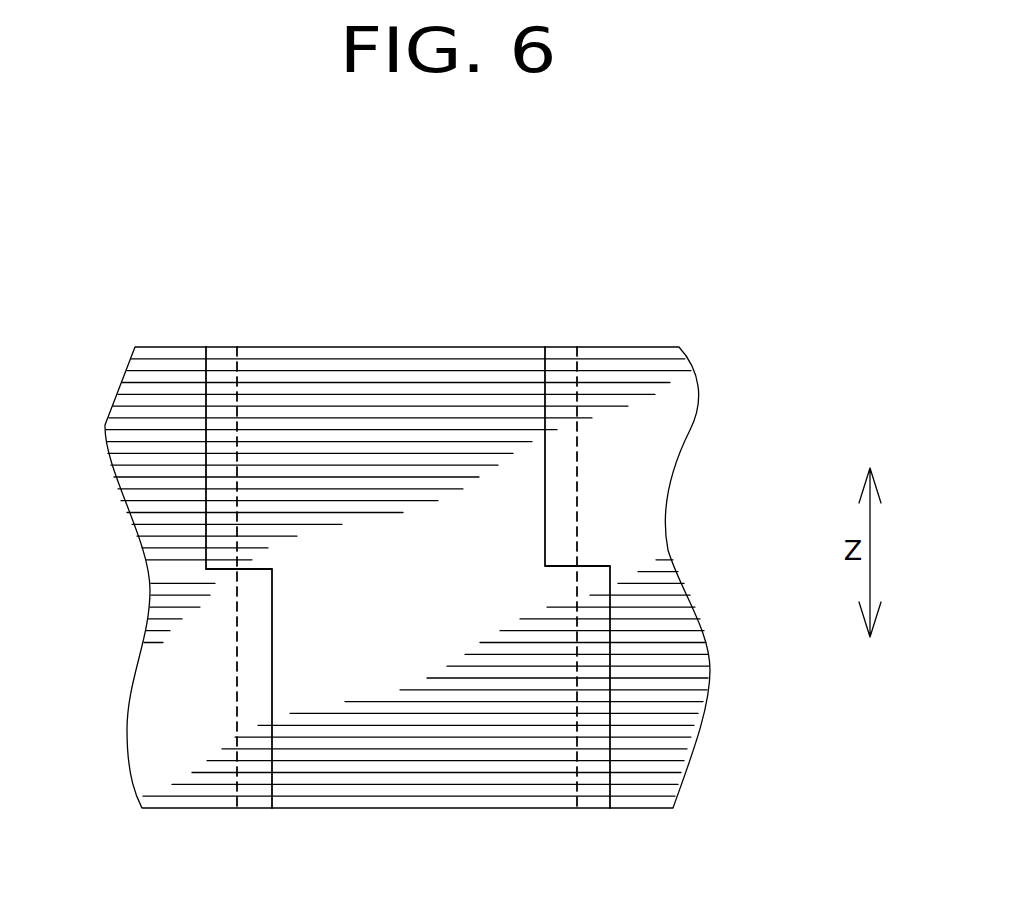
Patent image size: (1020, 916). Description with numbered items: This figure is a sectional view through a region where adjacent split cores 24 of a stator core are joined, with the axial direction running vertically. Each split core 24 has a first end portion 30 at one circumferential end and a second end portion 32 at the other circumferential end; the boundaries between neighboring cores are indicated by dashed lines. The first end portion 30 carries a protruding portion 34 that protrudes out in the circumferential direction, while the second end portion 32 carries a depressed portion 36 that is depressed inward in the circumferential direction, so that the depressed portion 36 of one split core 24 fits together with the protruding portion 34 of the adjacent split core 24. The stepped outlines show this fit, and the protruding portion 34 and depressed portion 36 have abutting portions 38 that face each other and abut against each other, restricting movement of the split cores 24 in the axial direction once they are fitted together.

The split core 24 is at (157, 347).
The first end portion 30 is at (237, 397).
The second end portion 32 is at (610, 260).
The protruding portion 34 is at (220, 377).
The depressed portion 36 is at (207, 403).
The abutting portion 38 is at (235, 582).